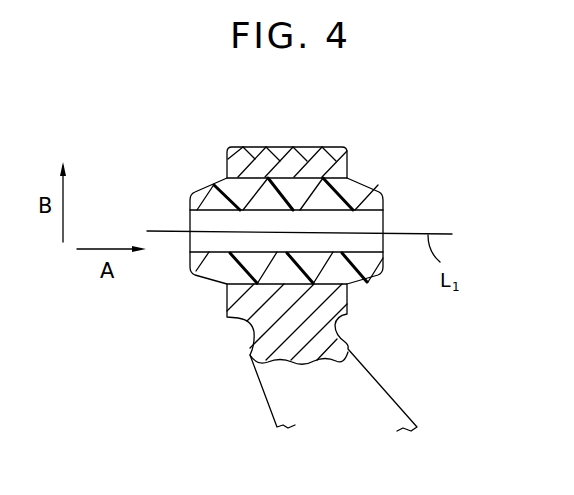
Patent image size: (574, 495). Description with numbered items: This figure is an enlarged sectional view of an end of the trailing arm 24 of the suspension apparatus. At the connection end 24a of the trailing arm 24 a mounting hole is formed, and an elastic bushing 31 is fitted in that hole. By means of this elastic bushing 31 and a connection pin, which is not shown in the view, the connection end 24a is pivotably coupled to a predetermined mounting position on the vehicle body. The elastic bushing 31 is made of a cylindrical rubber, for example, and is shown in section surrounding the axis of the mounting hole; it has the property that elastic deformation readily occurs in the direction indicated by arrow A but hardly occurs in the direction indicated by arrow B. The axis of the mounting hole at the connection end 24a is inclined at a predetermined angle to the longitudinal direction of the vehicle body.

The connection end 24a is at (306, 152).
The elastic bushing 31 is at (360, 198).
The trailing arm 24 is at (370, 368).